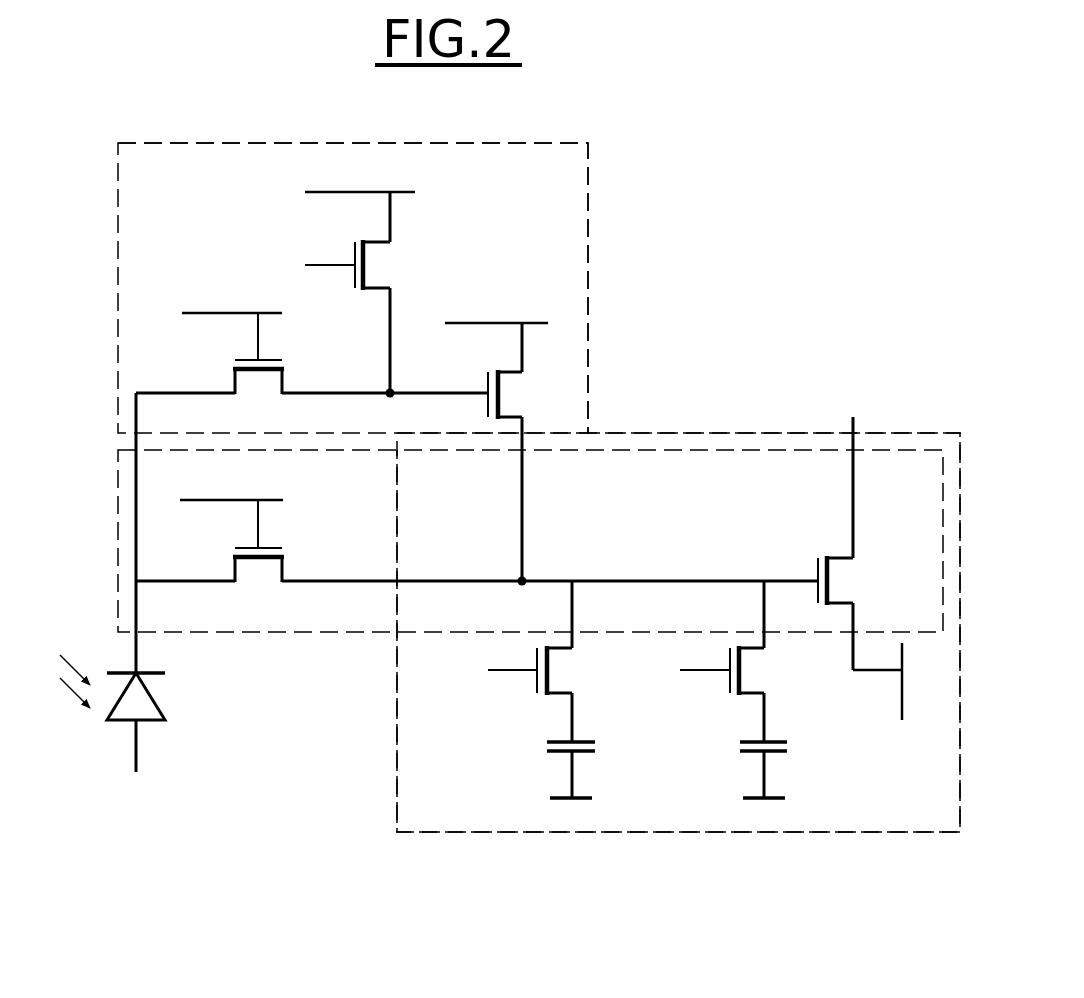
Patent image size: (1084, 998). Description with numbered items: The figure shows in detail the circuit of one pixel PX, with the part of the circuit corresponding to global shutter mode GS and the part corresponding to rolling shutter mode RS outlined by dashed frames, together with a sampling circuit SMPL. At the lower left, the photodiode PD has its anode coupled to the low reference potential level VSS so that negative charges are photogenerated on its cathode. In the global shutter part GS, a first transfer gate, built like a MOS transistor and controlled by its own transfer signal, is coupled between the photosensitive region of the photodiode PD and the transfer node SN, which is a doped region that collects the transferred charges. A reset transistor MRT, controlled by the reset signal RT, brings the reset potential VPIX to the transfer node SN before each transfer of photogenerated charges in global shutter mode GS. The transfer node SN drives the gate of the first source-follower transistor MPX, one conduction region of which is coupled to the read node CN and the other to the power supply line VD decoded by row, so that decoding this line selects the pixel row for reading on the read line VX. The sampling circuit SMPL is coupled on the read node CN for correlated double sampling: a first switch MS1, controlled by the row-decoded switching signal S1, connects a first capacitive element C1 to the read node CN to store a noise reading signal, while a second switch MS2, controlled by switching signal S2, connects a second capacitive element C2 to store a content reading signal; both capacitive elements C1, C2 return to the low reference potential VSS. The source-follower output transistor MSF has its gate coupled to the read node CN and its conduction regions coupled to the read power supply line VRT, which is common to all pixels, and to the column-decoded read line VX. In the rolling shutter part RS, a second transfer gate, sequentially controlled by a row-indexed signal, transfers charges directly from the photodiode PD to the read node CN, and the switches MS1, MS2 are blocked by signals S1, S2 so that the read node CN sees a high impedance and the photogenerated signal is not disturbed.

The pixel PX is at (742, 246).
The global shutter mode GS is at (118, 287).
The rolling shutter mode RS is at (118, 540).
The sampling circuit SMPL is at (410, 733).
The photodiode PD is at (131, 713).
The reset transistor MRT is at (400, 316).
The reset signal RT is at (325, 249).
The reset potential VPIX is at (374, 201).
The transfer node SN is at (385, 380).
The power supply line decoded by row VD is at (503, 330).
The first source-follower transistor MPX is at (533, 475).
The read node CN is at (550, 567).
The first switch MS1 is at (579, 661).
The first switching signal S1 is at (493, 685).
The first capacitive element C1 is at (589, 763).
The second switch MS2 is at (773, 661).
The second switching signal S2 is at (686, 685).
The second capacitive element C2 is at (783, 763).
The low reference potential level VSS is at (449, 803).
The read power supply line VRT is at (851, 471).
The source-follower output transistor MSF is at (863, 613).
The read line VX is at (898, 697).